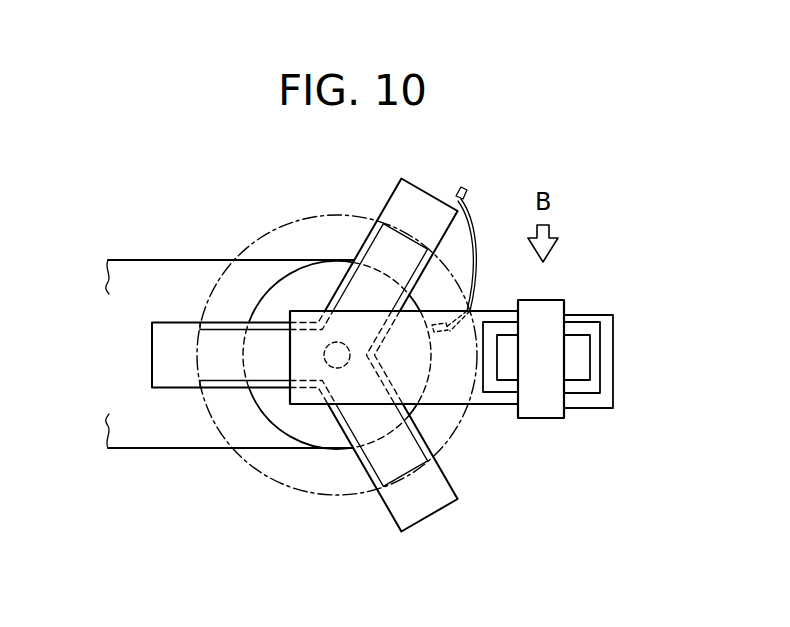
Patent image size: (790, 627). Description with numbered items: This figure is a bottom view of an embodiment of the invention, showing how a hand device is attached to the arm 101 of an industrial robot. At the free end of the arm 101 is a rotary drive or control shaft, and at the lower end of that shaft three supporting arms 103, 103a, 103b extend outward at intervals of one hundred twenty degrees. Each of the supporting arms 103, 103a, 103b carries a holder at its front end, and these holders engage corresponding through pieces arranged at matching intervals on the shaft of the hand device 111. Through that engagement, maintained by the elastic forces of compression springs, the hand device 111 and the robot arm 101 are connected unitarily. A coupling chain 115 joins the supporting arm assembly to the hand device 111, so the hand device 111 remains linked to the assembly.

The arm 101 is at (140, 258).
The supporting arm 103 is at (180, 330).
The supporting arm 103a is at (420, 507).
The supporting arm 103b is at (417, 200).
The hand device 111 is at (477, 397).
The coupling chain 115 is at (480, 276).